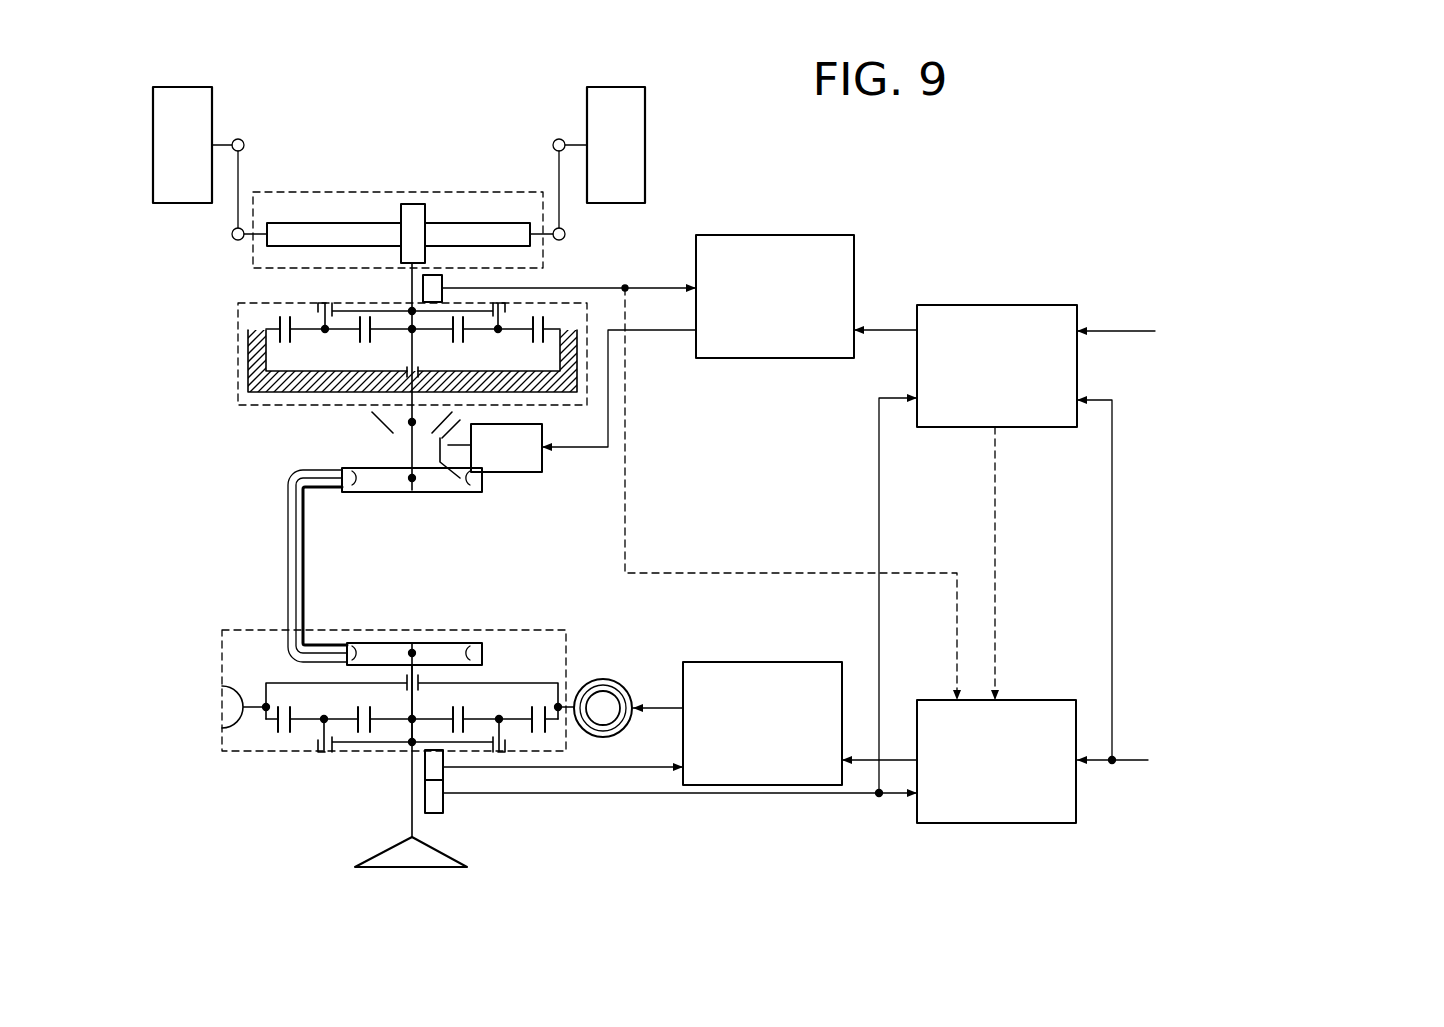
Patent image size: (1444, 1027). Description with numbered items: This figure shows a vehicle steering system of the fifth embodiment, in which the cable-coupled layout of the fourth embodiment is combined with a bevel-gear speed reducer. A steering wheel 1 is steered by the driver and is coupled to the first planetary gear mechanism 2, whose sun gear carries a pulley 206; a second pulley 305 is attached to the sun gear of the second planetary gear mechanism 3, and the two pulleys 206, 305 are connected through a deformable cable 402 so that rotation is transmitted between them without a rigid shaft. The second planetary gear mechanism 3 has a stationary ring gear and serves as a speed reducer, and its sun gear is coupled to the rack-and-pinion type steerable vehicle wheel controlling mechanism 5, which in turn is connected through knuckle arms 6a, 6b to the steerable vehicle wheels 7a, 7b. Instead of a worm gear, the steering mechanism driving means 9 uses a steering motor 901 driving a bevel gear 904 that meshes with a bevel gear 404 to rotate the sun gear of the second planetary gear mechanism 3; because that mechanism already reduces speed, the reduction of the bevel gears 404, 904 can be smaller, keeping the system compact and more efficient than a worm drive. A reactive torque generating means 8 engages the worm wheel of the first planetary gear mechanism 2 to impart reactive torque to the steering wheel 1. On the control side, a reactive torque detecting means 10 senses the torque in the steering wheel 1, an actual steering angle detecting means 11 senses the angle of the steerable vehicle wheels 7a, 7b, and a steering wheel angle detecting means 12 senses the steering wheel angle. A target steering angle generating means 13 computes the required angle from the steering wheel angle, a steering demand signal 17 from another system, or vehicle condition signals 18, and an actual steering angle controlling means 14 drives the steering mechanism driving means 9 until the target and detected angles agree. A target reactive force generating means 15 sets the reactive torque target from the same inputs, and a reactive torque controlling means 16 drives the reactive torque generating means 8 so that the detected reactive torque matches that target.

The steering wheel 1 is at (375, 857).
The first planetary gear mechanism 2 is at (222, 743).
The second planetary gear mechanism 3 is at (238, 375).
The steerable vehicle wheel controlling mechanism 5 is at (253, 258).
The knuckle arm 6a is at (229, 144).
The knuckle arm 6b is at (573, 143).
The steerable vehicle wheel 7a is at (185, 87).
The steerable vehicle wheel 7b is at (600, 87).
The reactive torque generating means 8 is at (623, 722).
The steering mechanism driving means 9 is at (456, 470).
The reactive torque detecting means 10 is at (438, 775).
The actual steering angle detecting means 11 is at (446, 275).
The steering wheel angle detecting means 12 is at (438, 800).
The target steering angle generating means 13 is at (1055, 305).
The actual steering angle controlling means 14 is at (828, 235).
The target reactive force generating means 15 is at (1053, 700).
The reactive torque controlling means 16 is at (817, 662).
The steering demand signal 17 is at (1267, 303).
The vehicle condition signals 18 is at (1265, 720).
The pulley 206 is at (438, 652).
The pulley 305 is at (443, 492).
The deformable cable 402 is at (297, 563).
The bevel gear 404 is at (380, 422).
The steering motor 901 is at (530, 472).
The bevel gear 904 is at (437, 455).